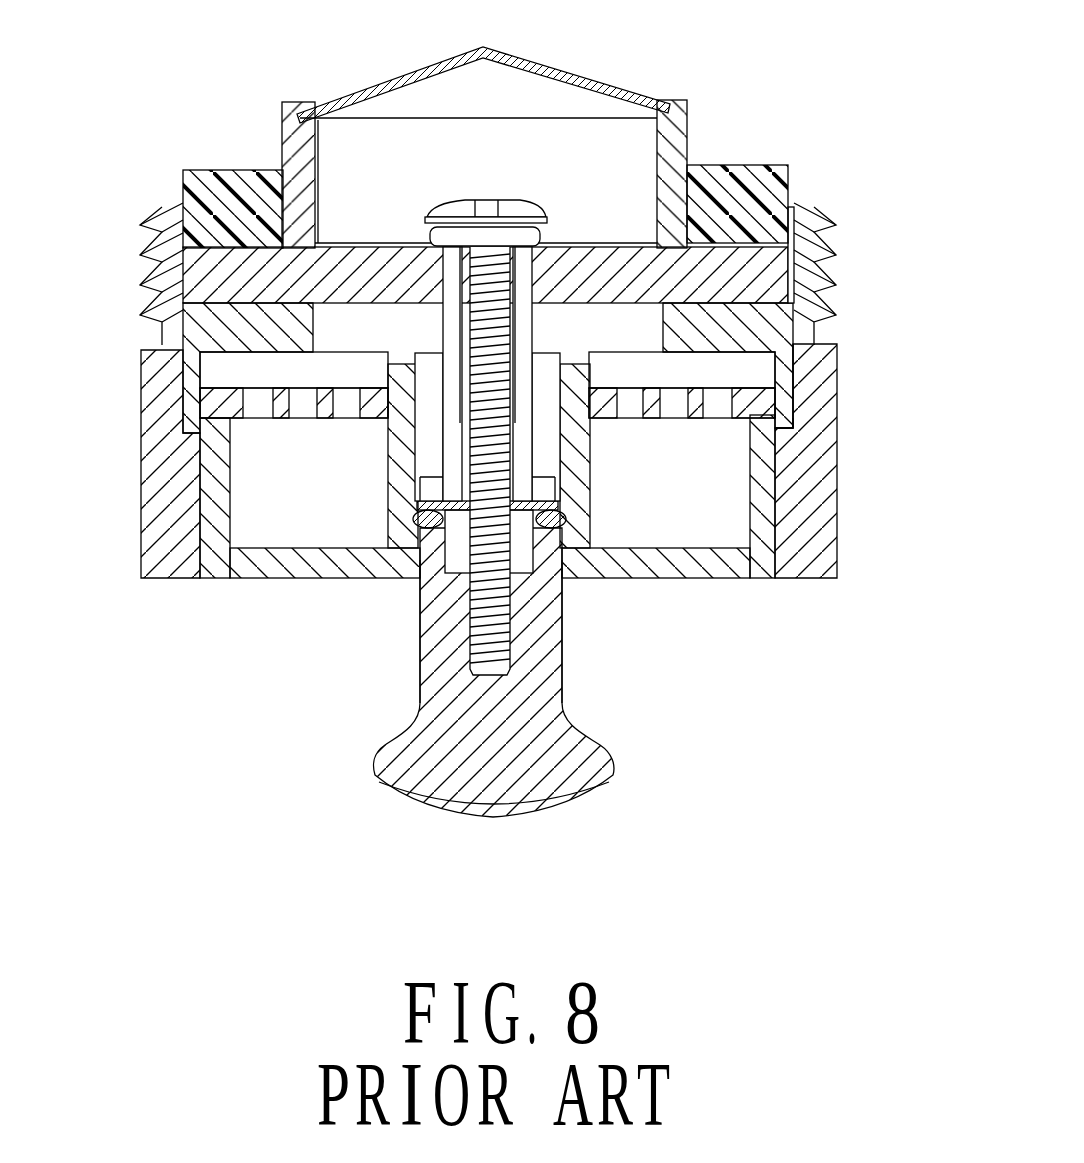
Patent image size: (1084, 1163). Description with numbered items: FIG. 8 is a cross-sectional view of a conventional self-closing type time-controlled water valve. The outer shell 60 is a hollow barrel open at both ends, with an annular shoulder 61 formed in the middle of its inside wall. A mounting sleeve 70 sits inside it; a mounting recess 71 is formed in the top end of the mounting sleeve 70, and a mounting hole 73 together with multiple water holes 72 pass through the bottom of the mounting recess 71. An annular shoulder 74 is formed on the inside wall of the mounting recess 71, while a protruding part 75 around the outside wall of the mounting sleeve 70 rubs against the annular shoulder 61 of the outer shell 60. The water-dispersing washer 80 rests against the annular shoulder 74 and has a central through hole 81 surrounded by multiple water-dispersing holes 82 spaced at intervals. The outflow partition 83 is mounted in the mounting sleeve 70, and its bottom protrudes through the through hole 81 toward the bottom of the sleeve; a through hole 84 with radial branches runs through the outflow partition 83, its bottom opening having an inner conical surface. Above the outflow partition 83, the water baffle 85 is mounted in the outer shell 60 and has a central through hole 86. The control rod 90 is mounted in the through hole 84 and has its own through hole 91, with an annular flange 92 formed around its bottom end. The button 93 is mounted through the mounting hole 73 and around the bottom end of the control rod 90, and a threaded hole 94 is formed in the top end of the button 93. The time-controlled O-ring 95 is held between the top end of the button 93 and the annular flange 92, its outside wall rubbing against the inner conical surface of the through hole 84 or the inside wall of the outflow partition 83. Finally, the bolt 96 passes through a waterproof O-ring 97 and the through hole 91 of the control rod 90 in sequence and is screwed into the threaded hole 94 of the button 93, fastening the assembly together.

The outer shell 60 is at (818, 568).
The annular shoulder 61 is at (796, 426).
The mounting sleeve 70 is at (218, 562).
The mounting recess 71 is at (240, 467).
The water holes 72 is at (290, 556).
The mounting hole 73 is at (385, 560).
The annular shoulder 74 is at (205, 430).
The protruding part 75 is at (793, 422).
The water-dispersing washer 80 is at (756, 412).
The through hole 81 is at (592, 415).
The water-dispersing holes 82 is at (678, 408).
The outflow partition 83 is at (227, 333).
The through hole 84 is at (607, 300).
The water baffle 85 is at (787, 213).
The through hole 86 is at (545, 243).
The control rod 90 is at (228, 170).
The through hole 91 is at (517, 367).
The annular flange 92 is at (415, 505).
The button 93 is at (490, 790).
The threaded hole 94 is at (420, 712).
The time-controlled O-ring 95 is at (427, 518).
The bolt 96 is at (470, 288).
The waterproof O-ring 97 is at (493, 234).